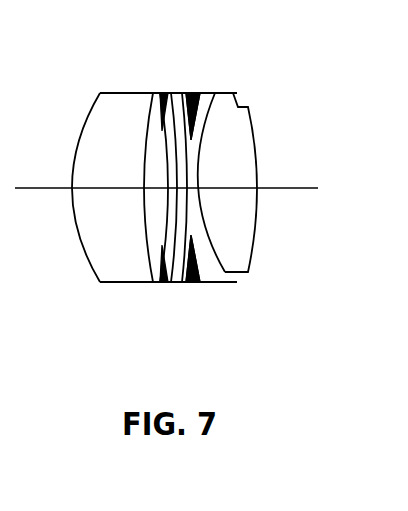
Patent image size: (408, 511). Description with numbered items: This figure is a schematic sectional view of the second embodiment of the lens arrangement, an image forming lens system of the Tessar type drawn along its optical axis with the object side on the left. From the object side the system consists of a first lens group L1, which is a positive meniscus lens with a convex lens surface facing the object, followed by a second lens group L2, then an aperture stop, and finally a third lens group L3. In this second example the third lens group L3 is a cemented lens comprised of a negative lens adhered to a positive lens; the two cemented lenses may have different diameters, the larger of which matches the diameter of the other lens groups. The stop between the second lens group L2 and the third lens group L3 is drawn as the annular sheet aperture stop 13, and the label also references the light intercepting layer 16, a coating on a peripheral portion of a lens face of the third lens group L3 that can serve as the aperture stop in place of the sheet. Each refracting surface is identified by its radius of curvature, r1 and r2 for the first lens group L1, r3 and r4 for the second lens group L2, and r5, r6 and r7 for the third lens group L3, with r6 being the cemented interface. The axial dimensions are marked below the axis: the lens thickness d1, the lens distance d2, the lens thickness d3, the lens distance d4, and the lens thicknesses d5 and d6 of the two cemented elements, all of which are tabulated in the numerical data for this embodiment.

The first lens group L1 is at (108, 40).
The second lens group L2 is at (183, 40).
The third lens group L3 is at (303, 40).
The radius of curvature of first lens surface r1 is at (87, 113).
The radius of curvature of second lens surface r2 is at (149, 132).
The radius of curvature of third lens surface r3 is at (160, 131).
The radius of curvature of fourth lens surface r4 is at (169, 93).
The radius of curvature of fifth lens surface r5 is at (188, 93).
The radius of curvature of sixth lens surface r6 is at (205, 138).
The radius of curvature of seventh lens surface r7 is at (253, 127).
The sheet aperture stop 13 is at (190, 138).
The light intercepting layer 16 is at (193, 187).
The lens thickness d1 is at (102, 190).
The lens distance d2 is at (148, 190).
The lens thickness d3 is at (158, 190).
The lens distance d4 is at (185, 190).
The lens thickness d5 is at (192, 190).
The lens thickness d6 is at (228, 190).